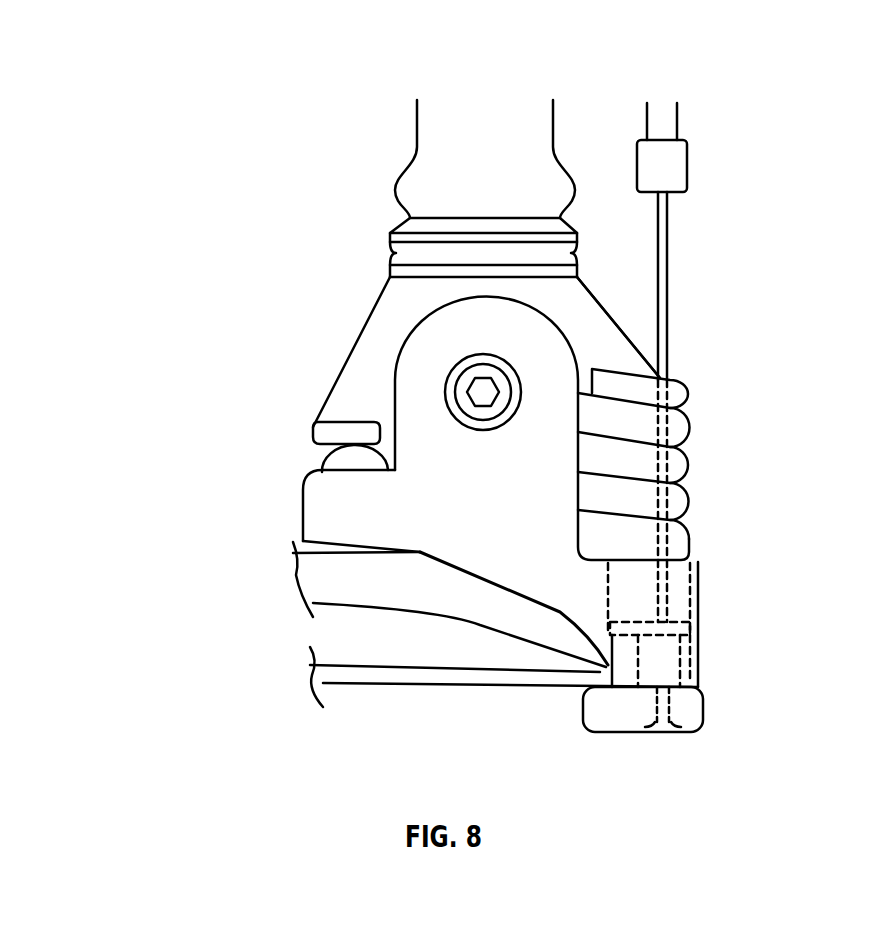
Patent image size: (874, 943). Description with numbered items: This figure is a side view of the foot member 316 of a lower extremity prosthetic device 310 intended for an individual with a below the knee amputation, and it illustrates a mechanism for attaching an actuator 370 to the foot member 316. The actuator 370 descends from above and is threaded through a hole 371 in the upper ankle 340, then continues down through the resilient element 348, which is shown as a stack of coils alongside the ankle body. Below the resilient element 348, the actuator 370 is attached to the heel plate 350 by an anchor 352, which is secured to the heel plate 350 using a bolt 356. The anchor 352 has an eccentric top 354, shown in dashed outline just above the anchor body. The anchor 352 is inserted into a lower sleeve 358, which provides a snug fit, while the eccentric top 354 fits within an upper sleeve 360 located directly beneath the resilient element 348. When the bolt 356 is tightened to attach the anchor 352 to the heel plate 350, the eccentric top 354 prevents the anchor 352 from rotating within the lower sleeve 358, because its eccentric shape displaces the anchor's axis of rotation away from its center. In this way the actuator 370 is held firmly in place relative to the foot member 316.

The lower extremity prosthetic device 310 is at (262, 100).
The foot member 316 is at (255, 375).
The upper ankle 340 is at (590, 333).
The resilient element 348 is at (677, 463).
The heel plate 350 is at (587, 713).
The anchor 352 is at (673, 667).
The eccentric top 354 is at (678, 623).
The bolt 356 is at (665, 732).
The lower sleeve 358 is at (698, 682).
The upper sleeve 360 is at (697, 567).
The actuator 370 is at (662, 242).
The hole 371 is at (670, 374).